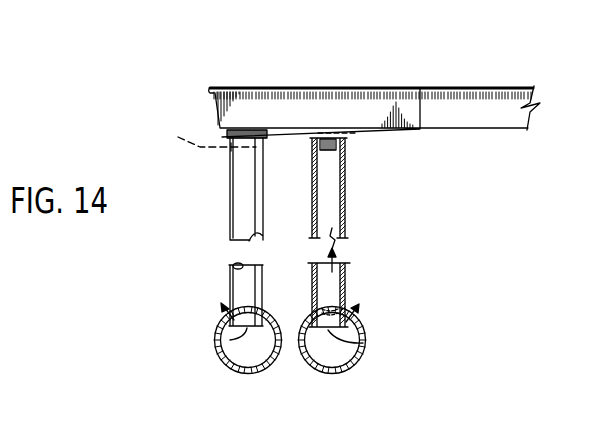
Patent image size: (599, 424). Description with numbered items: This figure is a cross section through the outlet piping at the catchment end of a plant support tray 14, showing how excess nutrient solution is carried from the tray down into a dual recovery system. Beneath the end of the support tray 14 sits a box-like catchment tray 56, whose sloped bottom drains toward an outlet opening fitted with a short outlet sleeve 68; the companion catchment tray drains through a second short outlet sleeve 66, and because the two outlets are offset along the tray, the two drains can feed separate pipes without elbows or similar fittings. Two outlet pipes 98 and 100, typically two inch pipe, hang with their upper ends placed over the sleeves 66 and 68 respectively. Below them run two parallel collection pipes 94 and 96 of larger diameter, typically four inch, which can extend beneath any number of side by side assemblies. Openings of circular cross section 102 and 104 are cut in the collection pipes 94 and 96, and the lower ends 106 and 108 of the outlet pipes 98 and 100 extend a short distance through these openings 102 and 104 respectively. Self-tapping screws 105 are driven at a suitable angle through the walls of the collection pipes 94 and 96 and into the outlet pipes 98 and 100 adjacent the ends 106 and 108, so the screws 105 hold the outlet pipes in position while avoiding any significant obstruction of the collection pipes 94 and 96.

The plant support tray 14 is at (457, 105).
The catchment tray 56 is at (343, 103).
The outlet sleeve 66 is at (201, 137).
The outlet sleeve 68 is at (325, 152).
The collection pipe 94 is at (234, 370).
The collection pipe 96 is at (319, 372).
The outlet pipe 98 is at (237, 217).
The outlet pipe 100 is at (347, 218).
The opening of circular cross section 102 is at (260, 316).
The opening of circular cross section 104 is at (313, 314).
The self-tapping screws 105 is at (222, 308).
The lower end of outlet pipe 106 is at (230, 340).
The lower end of outlet pipe 108 is at (363, 343).